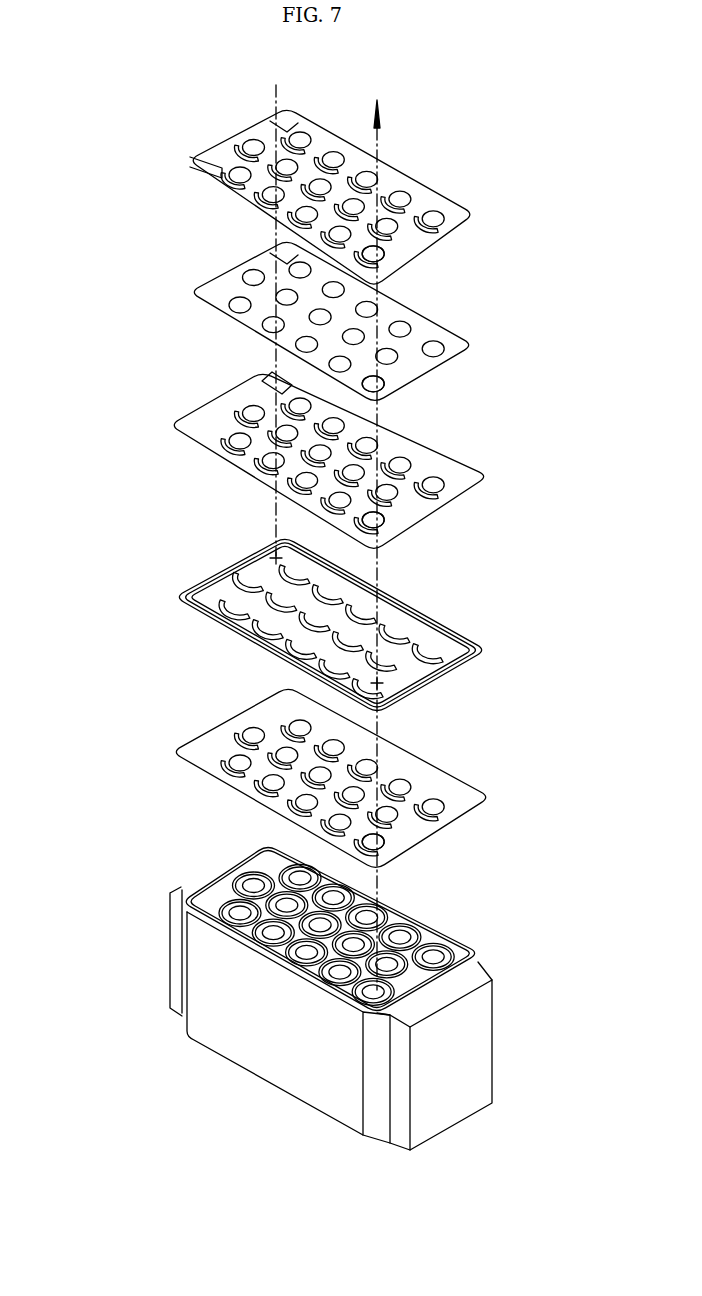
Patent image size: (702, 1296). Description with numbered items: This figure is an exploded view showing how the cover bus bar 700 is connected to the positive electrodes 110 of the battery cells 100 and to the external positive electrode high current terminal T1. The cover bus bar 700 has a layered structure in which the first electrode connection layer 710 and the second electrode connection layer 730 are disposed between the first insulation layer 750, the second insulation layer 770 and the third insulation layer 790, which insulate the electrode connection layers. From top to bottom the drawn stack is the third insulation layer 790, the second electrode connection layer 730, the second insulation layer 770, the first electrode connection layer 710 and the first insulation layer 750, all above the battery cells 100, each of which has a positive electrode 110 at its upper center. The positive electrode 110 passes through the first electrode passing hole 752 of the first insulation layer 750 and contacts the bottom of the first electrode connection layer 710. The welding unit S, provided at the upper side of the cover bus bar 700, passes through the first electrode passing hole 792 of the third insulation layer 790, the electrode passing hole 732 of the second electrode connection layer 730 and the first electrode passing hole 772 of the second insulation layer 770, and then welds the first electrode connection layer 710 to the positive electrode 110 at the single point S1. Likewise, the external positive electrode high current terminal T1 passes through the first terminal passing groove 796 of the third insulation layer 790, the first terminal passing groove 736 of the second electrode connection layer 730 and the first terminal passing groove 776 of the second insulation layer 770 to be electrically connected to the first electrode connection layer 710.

The cover bus bar 700 is at (95, 158).
The third insulation layer 790 is at (480, 214).
The first terminal passing groove 796 is at (263, 115).
The first electrode passing hole 792 is at (388, 252).
The second electrode connection layer 730 is at (480, 341).
The first terminal passing groove 736 is at (262, 250).
The electrode passing hole 732 is at (388, 383).
The second insulation layer 770 is at (491, 474).
The first terminal passing groove 776 is at (259, 382).
The first electrode passing hole 772 is at (388, 517).
The first electrode connection layer 710 is at (488, 639).
The first insulation layer 750 is at (491, 794).
The first electrode passing hole 752 is at (388, 839).
The battery cell 100 is at (411, 926).
The positive electrode 110 is at (472, 975).
The external positive electrode high current terminal T1 is at (275, 312).
The welding unit S is at (384, 118).
The single point S1 is at (381, 684).